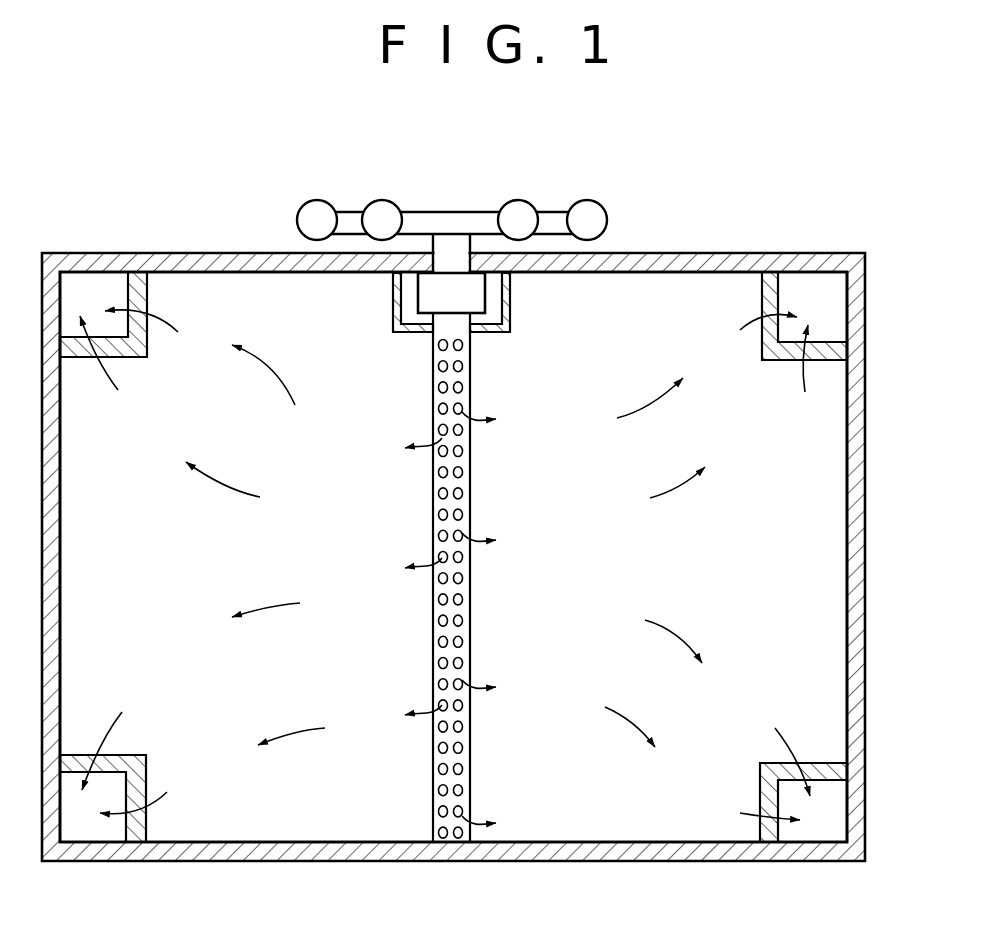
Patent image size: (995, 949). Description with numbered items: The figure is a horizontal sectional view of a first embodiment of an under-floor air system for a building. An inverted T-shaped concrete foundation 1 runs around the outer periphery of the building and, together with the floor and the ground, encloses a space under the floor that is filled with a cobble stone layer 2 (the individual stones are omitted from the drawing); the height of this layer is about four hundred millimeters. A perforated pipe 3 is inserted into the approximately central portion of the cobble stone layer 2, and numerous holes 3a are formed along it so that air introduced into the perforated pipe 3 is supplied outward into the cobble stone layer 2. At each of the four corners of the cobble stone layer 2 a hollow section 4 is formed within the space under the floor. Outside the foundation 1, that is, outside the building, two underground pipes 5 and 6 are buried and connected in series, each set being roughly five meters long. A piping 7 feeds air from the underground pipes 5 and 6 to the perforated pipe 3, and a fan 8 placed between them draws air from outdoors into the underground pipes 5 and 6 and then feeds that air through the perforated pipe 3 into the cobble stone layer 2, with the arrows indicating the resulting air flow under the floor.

The foundation 1 is at (857, 545).
The cobble stone layer 2 is at (810, 647).
The perforated pipe 3 is at (470, 761).
The holes 3a is at (459, 470).
The hollow section 4 is at (815, 828).
The underground pipe 5 is at (317, 203).
The underground pipe 6 is at (380, 203).
The piping 7 is at (432, 218).
The fan 8 is at (486, 293).